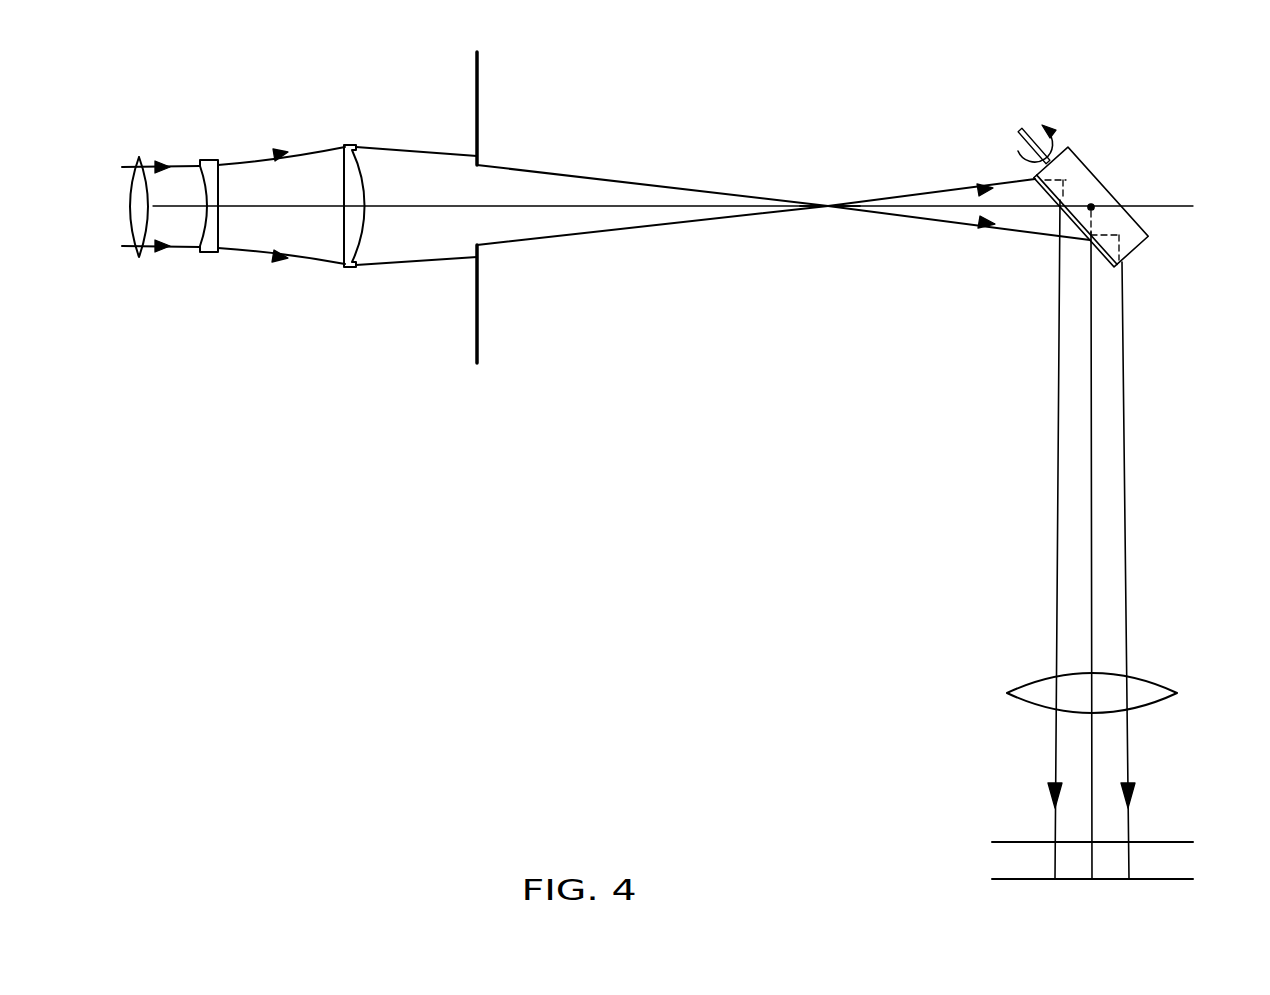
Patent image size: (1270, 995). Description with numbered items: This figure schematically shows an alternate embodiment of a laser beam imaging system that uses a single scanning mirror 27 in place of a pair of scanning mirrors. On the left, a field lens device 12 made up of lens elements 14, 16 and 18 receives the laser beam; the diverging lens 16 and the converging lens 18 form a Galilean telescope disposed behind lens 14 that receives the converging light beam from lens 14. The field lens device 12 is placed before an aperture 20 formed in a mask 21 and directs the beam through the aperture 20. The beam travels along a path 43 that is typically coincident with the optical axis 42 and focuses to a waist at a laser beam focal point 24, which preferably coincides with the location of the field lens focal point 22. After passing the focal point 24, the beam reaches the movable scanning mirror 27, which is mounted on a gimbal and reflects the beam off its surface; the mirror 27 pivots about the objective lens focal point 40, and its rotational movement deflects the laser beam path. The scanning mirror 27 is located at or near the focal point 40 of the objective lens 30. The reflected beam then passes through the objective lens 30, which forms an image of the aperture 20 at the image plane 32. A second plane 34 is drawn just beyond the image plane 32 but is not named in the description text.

The field lens device 12 is at (114, 297).
The lens element 14 is at (137, 158).
The diverging lens element 16 is at (210, 158).
The converging lens element 18 is at (350, 145).
The aperture 20 is at (476, 181).
The mask 21 is at (480, 72).
The field lens focal point 22 is at (826, 220).
The laser beam focal point 24 is at (836, 193).
The scanning mirror 27 is at (1088, 160).
The objective lens 30 is at (1160, 683).
The image plane 32 is at (1175, 842).
The second plane 34 is at (1175, 879).
The objective lens focal point 40 is at (1110, 195).
The optical axis 42 is at (1090, 282).
The laser beam path 43 is at (555, 188).